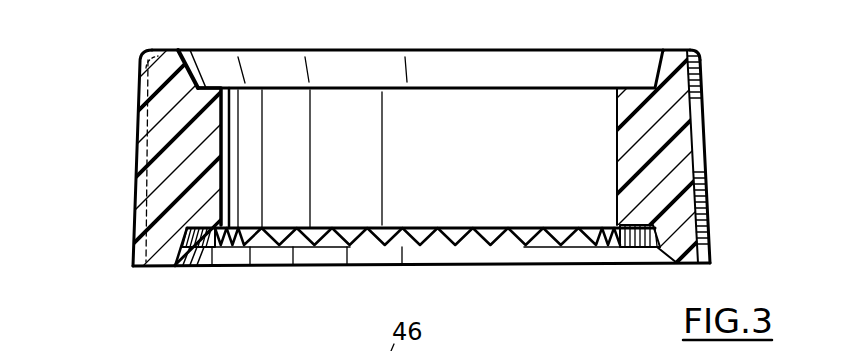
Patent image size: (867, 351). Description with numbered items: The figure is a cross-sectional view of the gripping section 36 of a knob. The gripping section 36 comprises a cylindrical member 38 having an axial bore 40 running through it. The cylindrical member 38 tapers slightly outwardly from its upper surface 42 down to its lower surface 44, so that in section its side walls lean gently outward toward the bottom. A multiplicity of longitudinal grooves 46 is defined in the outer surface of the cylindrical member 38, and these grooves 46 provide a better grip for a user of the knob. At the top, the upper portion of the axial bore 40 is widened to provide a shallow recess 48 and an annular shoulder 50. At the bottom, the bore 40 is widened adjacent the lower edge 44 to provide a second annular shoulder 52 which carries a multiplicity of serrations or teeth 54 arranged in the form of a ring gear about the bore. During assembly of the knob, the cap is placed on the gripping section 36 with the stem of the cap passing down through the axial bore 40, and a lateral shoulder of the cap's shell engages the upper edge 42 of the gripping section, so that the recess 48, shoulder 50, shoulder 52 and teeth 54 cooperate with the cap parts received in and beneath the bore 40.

The gripping section 36 is at (124, 133).
The cylindrical member 38 is at (677, 155).
The axial bore 40 is at (468, 100).
The upper surface 42 is at (674, 52).
The lower surface 44 is at (690, 258).
The longitudinal grooves 46 is at (694, 128).
The shallow recess 48 is at (198, 67).
The annular shoulder 50 is at (220, 86).
The annular shoulder 52 is at (205, 250).
The serrations or teeth 54 is at (542, 240).